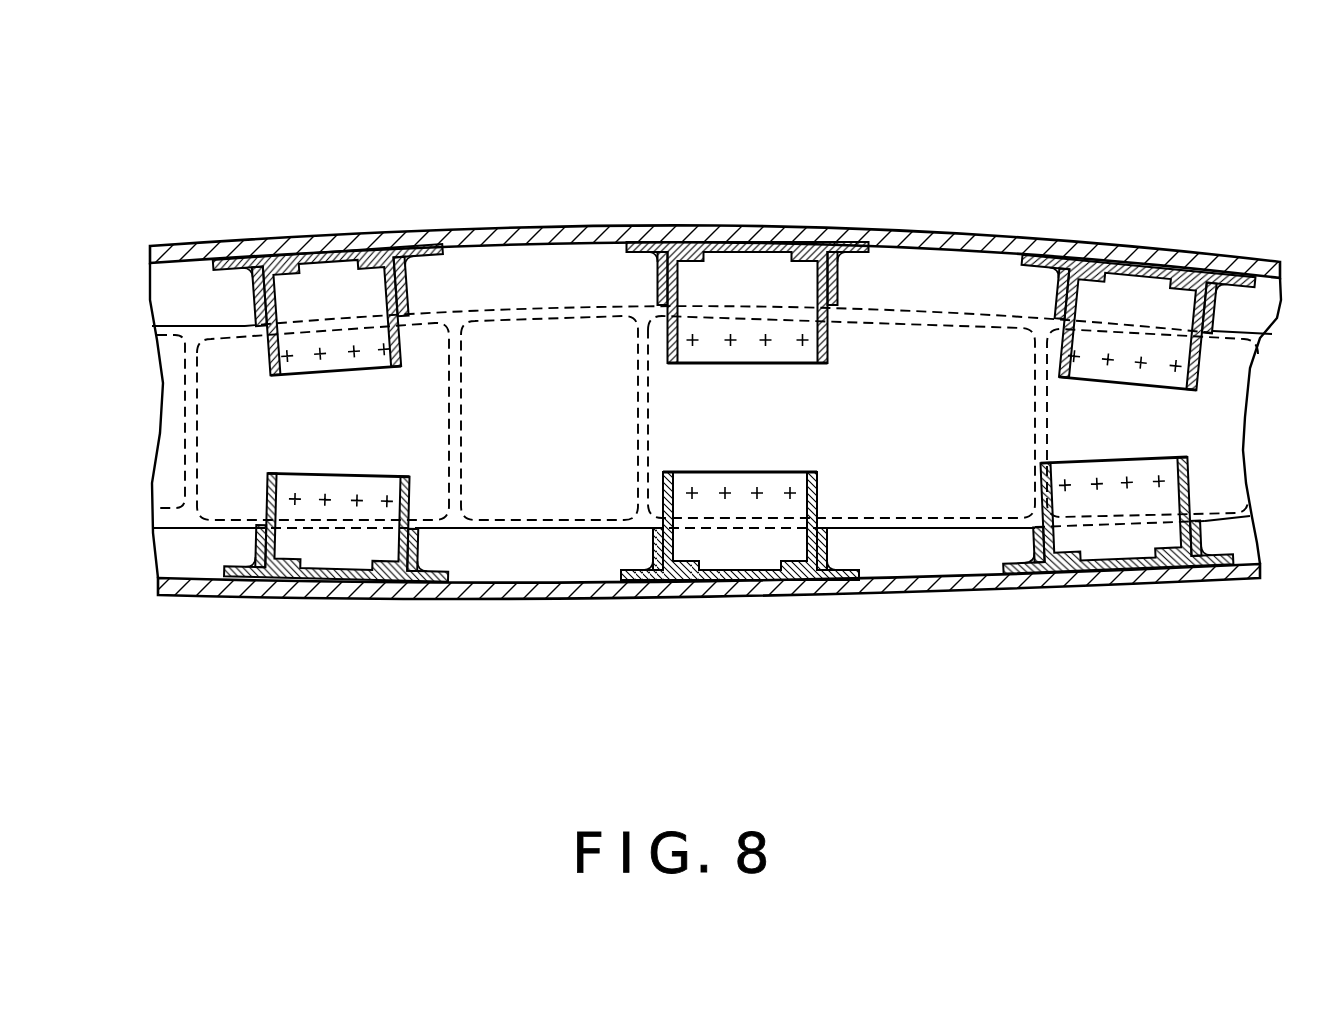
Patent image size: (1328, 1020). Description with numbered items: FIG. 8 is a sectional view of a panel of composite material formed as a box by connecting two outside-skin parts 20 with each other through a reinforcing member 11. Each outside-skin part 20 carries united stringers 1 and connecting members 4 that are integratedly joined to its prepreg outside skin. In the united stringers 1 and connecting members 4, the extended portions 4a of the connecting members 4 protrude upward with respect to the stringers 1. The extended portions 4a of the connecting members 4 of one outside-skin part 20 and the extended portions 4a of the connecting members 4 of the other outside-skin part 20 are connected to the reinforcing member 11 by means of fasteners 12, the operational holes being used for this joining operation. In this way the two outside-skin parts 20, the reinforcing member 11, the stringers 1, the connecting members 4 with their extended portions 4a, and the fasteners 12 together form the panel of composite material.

The stringer 1 is at (250, 247).
The connecting member 4 is at (313, 303).
The extended portion 4a is at (370, 330).
The reinforcing member 11 is at (240, 420).
The fastener 12 is at (257, 343).
The outside-skin part 20 is at (923, 217).